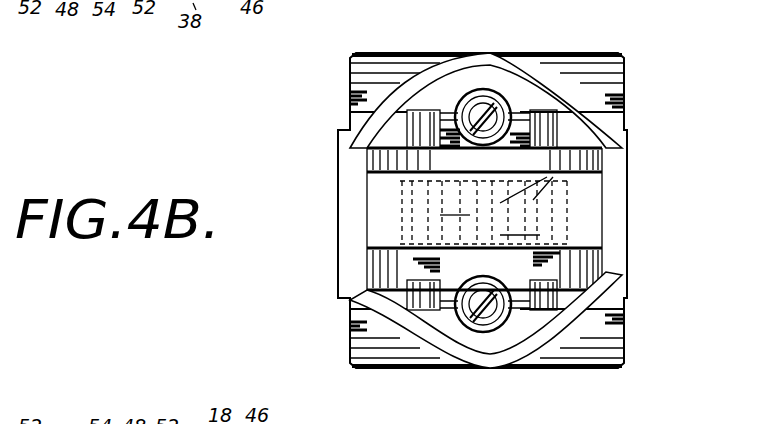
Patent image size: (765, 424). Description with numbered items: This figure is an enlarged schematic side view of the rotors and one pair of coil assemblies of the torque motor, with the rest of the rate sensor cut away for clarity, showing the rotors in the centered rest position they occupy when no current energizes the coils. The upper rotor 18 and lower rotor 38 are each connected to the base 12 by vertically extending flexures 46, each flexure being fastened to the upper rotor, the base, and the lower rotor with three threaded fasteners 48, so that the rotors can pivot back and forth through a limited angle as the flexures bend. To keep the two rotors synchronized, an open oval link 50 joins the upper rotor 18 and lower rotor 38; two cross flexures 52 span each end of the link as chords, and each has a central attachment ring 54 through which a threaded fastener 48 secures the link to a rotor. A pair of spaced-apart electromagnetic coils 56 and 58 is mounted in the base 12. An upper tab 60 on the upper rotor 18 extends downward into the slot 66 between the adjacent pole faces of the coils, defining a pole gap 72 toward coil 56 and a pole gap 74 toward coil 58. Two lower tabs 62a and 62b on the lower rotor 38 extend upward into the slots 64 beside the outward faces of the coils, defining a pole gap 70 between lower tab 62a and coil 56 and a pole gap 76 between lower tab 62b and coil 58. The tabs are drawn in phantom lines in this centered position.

The base 12 is at (383, 228).
The upper rotor 18 is at (583, 50).
The lower rotor 38 is at (583, 374).
The flexures 46 is at (350, 58).
The threaded fasteners 48 is at (348, 83).
The link 50 is at (348, 128).
The cross flexures 52 is at (402, 53).
The central attachment ring 54 is at (522, 97).
The electromagnetic coil 56 is at (452, 194).
The electromagnetic coil 58 is at (515, 230).
The upper tab 60 is at (585, 258).
The lower tab 62a is at (430, 250).
The lower tab 62b is at (555, 208).
The slots 64 is at (432, 213).
The slot 66 is at (620, 120).
The pole gap 70 is at (367, 173).
The pole gap 72 is at (398, 303).
The pole gap 74 is at (527, 160).
The pole gap 76 is at (547, 190).